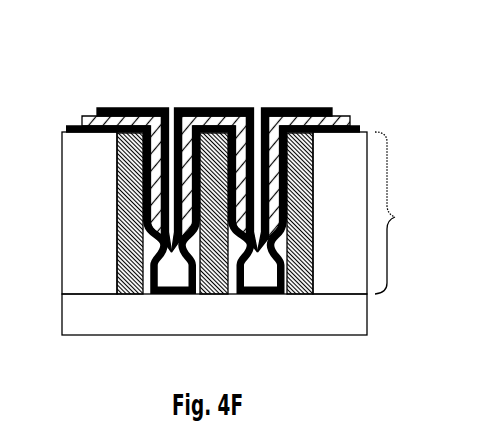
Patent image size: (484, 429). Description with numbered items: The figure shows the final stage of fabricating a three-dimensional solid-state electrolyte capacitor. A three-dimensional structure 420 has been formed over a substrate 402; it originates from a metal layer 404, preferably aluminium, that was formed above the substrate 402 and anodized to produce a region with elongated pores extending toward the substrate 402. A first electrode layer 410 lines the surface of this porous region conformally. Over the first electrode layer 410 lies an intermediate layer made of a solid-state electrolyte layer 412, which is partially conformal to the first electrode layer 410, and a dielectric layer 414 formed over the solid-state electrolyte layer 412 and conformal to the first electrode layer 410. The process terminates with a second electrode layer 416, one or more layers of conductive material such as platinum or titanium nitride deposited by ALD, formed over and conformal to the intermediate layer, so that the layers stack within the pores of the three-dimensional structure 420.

The substrate 402 is at (70, 318).
The metal layer 404 is at (68, 228).
The first electrode layer 410 is at (77, 127).
The solid-state electrolyte layer 412 is at (140, 122).
The dielectric layer 414 is at (204, 118).
The second electrode layer 416 is at (285, 112).
The three-dimensional structure 420 is at (403, 213).